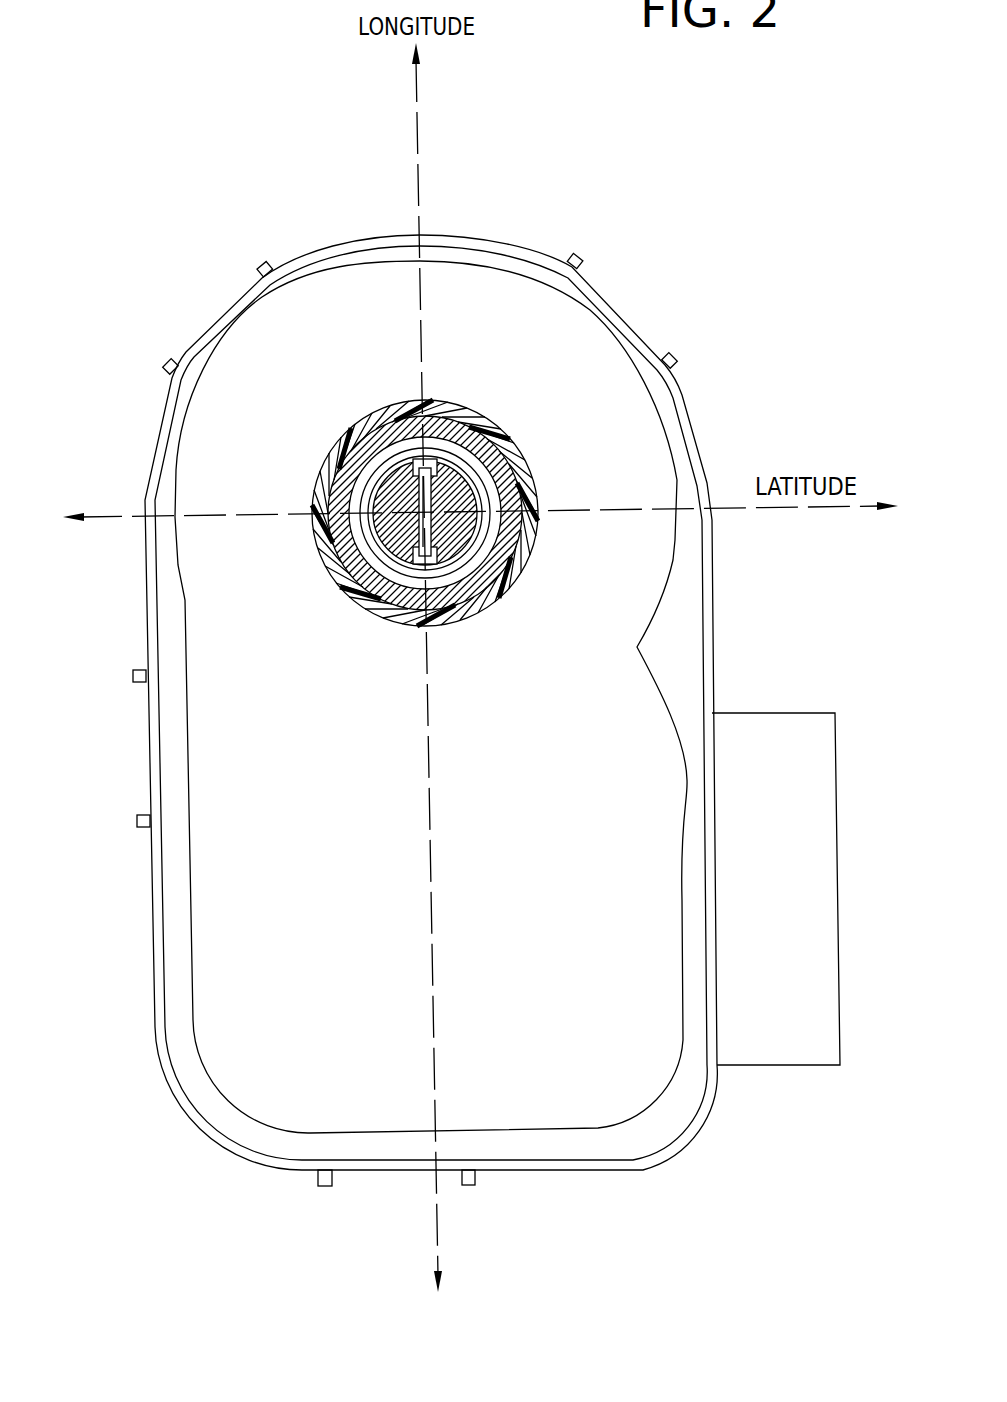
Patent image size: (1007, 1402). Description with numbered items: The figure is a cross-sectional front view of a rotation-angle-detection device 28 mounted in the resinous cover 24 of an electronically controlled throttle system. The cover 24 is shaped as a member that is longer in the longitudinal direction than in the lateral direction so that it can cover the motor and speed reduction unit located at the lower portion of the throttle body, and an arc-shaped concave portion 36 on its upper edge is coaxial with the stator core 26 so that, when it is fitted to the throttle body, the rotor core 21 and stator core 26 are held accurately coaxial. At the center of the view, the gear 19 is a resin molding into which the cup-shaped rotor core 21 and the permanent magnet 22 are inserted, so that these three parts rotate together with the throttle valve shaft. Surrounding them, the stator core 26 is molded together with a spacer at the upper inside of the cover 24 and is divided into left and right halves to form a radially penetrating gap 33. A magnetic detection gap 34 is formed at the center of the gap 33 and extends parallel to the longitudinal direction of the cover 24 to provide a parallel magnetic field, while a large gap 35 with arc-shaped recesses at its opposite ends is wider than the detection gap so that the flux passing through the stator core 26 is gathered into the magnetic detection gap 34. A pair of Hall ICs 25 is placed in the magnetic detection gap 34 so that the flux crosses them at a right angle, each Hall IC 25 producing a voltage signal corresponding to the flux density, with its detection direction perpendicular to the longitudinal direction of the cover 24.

The gear 19 is at (455, 403).
The rotor core 21 is at (512, 433).
The permanent magnet 22 is at (375, 462).
The resinous cover 24 is at (602, 293).
The Hall IC 25 is at (350, 500).
The stator core 26 is at (457, 522).
The rotation-angle-detection device 28 is at (502, 410).
The gap 33 is at (448, 612).
The magnetic detection gap 34 is at (432, 572).
The large gap 35 is at (478, 482).
The arc-shaped concave portion 36 is at (618, 338).